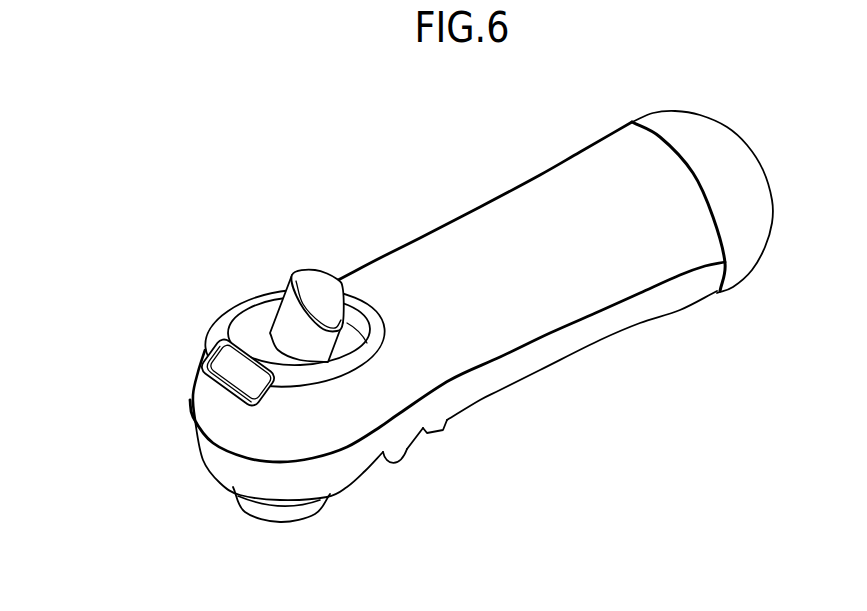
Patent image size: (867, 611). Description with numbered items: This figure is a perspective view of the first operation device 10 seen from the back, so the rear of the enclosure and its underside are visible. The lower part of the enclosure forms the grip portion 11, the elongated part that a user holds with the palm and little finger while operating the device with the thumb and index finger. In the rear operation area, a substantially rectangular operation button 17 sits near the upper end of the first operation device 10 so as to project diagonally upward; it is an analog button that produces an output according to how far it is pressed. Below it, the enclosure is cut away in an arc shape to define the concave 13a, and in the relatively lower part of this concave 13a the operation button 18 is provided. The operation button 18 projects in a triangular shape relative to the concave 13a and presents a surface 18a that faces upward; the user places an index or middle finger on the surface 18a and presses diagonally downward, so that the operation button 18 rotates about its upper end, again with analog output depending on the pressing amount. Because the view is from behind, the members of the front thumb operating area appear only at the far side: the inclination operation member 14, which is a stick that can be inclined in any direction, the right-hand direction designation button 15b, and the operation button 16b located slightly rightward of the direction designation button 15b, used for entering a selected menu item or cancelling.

The first operation device 10 is at (447, 342).
The grip portion 11 is at (562, 197).
The concave 13a is at (244, 325).
The inclination operation member 14 is at (334, 526).
The direction designation button 15b is at (435, 428).
The operation button 16b is at (395, 458).
The operation button 17 is at (217, 360).
The operation button 18 is at (267, 267).
The surface facing upward 18a is at (282, 307).